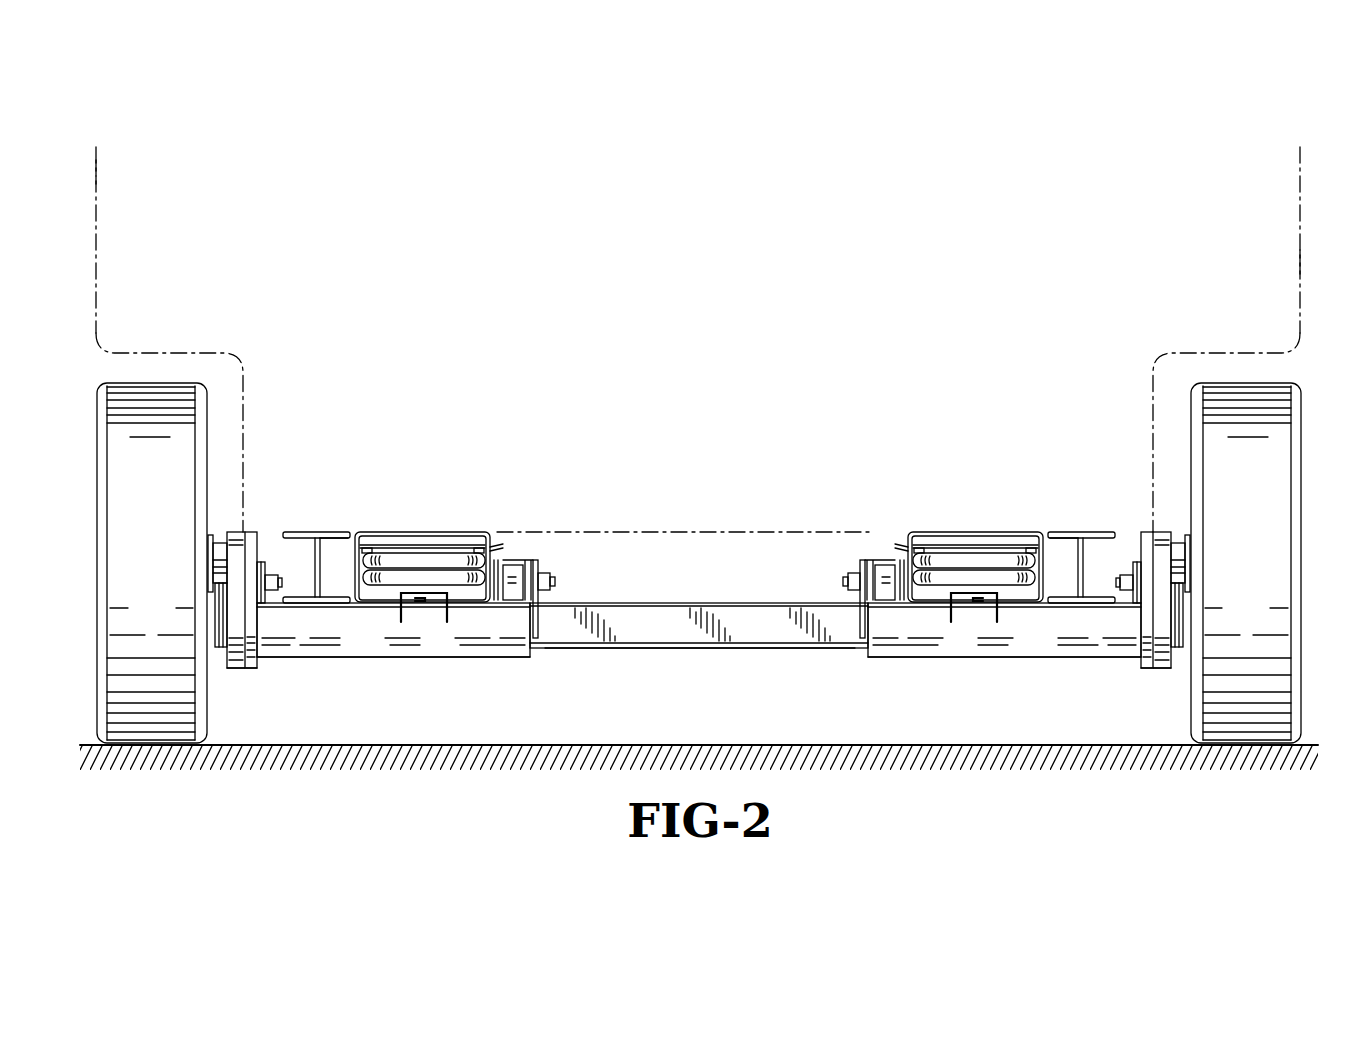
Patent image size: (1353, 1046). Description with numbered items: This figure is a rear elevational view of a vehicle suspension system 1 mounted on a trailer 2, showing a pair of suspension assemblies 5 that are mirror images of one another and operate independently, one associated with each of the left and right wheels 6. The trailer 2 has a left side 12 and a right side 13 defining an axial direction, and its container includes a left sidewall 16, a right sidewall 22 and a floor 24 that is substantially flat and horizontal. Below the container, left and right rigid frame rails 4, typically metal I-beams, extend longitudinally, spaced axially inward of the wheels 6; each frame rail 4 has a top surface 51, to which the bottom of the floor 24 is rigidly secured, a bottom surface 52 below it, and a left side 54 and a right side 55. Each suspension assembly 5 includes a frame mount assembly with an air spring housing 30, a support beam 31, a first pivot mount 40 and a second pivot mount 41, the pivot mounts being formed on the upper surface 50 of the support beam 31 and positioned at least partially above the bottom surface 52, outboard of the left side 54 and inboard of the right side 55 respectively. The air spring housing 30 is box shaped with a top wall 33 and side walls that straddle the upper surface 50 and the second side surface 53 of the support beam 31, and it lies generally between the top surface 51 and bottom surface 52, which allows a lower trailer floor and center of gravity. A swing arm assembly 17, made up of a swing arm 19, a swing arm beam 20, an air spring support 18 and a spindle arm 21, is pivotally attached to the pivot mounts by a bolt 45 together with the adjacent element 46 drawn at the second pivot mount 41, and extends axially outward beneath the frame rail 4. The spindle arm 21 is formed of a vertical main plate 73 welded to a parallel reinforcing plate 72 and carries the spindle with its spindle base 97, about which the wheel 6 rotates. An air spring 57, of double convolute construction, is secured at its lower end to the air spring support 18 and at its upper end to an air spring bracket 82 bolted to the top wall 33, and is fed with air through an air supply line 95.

The vehicle suspension system 1 is at (697, 577).
The trailer 2 is at (697, 348).
The frame rail 4 is at (698, 571).
The suspension assembly 5 is at (561, 662).
The wheel 6 is at (148, 392).
The left side 12 is at (94, 208).
The right side 13 is at (1302, 208).
The left sidewall 16 is at (99, 172).
The swing arm assembly 17 is at (699, 659).
The air spring support 18 is at (396, 623).
The swing arm 19 is at (518, 556).
The swing arm beam 20 is at (457, 658).
The spindle arm 21 is at (236, 676).
The right sidewall 22 is at (1299, 262).
The floor 24 is at (702, 535).
The air spring housing 30 is at (699, 521).
The support beam 31 is at (722, 652).
The top wall 33 is at (386, 532).
The first pivot mount 40 is at (267, 556).
The second pivot mount 41 is at (539, 545).
The bolt 45 is at (556, 581).
The bushing block 46 is at (522, 566).
The upper surface 50 is at (699, 639).
The top surface 51 is at (333, 531).
The bottom surface 52 is at (336, 604).
The second side surface 53 is at (667, 630).
The left side 54 is at (278, 530).
The right side 55 is at (349, 530).
The air spring 57 is at (411, 559).
The reinforcing plate 72 is at (252, 669).
The main plate 73 is at (696, 611).
The air spring bracket 82 is at (435, 545).
The air supply line 95 is at (500, 546).
The spindle base 97 is at (219, 561).